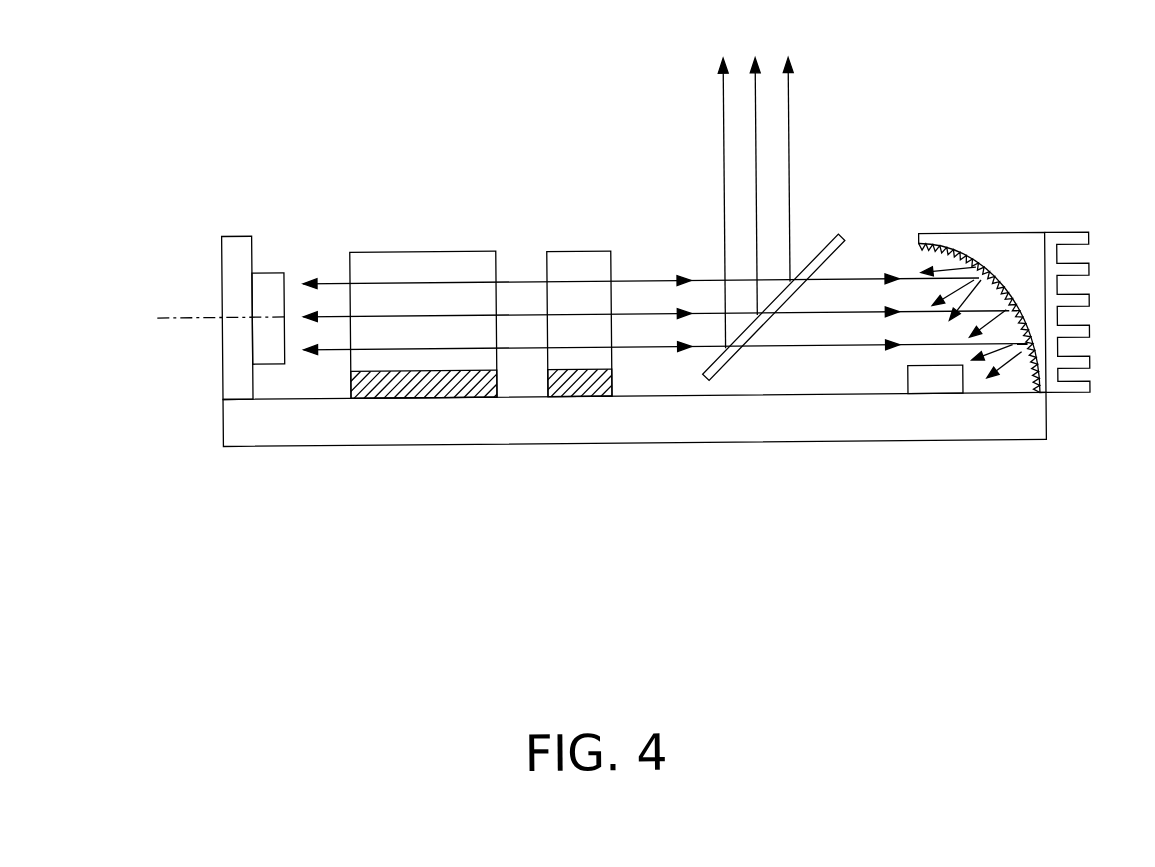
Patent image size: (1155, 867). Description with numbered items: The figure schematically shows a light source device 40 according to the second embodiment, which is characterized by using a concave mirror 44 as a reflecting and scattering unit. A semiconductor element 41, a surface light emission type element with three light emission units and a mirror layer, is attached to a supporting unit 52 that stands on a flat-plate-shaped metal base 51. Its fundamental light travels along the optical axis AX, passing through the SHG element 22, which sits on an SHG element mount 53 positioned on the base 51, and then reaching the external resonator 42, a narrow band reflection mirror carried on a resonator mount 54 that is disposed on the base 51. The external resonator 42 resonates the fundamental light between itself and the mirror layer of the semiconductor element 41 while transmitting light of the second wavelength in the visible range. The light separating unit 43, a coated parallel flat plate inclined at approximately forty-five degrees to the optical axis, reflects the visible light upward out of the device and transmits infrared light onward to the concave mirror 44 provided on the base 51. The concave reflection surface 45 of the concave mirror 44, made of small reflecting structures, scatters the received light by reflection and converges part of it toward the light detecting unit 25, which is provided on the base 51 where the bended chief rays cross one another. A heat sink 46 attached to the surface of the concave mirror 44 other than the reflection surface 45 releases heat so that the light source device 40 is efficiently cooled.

The light source device 40 is at (380, 80).
The SHG element 22 is at (453, 266).
The light detecting unit 25 is at (937, 383).
The semiconductor element 41 is at (268, 277).
The external resonator 42 is at (587, 266).
The light separating unit 43 is at (841, 239).
The concave mirror 44 is at (998, 245).
The reflection surface 45 is at (921, 250).
The heat sink 46 is at (1062, 246).
The base 51 is at (832, 424).
The supporting unit 52 is at (233, 255).
The SHG element mount 53 is at (437, 388).
The resonator mount 54 is at (580, 389).
The optical axis AX is at (193, 319).